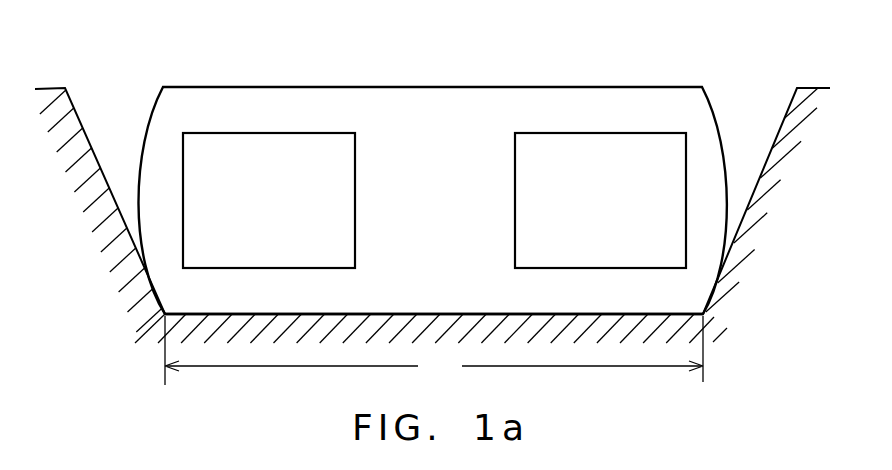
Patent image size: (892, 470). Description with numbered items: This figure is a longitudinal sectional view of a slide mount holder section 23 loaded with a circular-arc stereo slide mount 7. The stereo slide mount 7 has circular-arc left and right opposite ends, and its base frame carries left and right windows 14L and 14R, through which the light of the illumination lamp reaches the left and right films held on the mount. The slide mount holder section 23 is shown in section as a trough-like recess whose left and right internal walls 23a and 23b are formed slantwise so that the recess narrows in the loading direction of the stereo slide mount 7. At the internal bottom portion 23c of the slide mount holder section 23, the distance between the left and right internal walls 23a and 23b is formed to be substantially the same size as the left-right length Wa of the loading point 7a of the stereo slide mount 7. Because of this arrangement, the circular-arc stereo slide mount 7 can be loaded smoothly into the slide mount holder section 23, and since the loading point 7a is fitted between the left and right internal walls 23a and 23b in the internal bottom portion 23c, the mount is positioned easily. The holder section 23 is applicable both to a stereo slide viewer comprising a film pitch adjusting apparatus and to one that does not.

The stereo slide mount 7 is at (418, 101).
The loading point 7a is at (450, 313).
The left window 14L is at (253, 135).
The right window 14R is at (590, 135).
The slide mount holder section 23 is at (432, 184).
The left internal wall 23a is at (79, 117).
The right internal wall 23b is at (770, 153).
The internal bottom portion 23c is at (359, 313).
The left-right length Wa is at (434, 350).